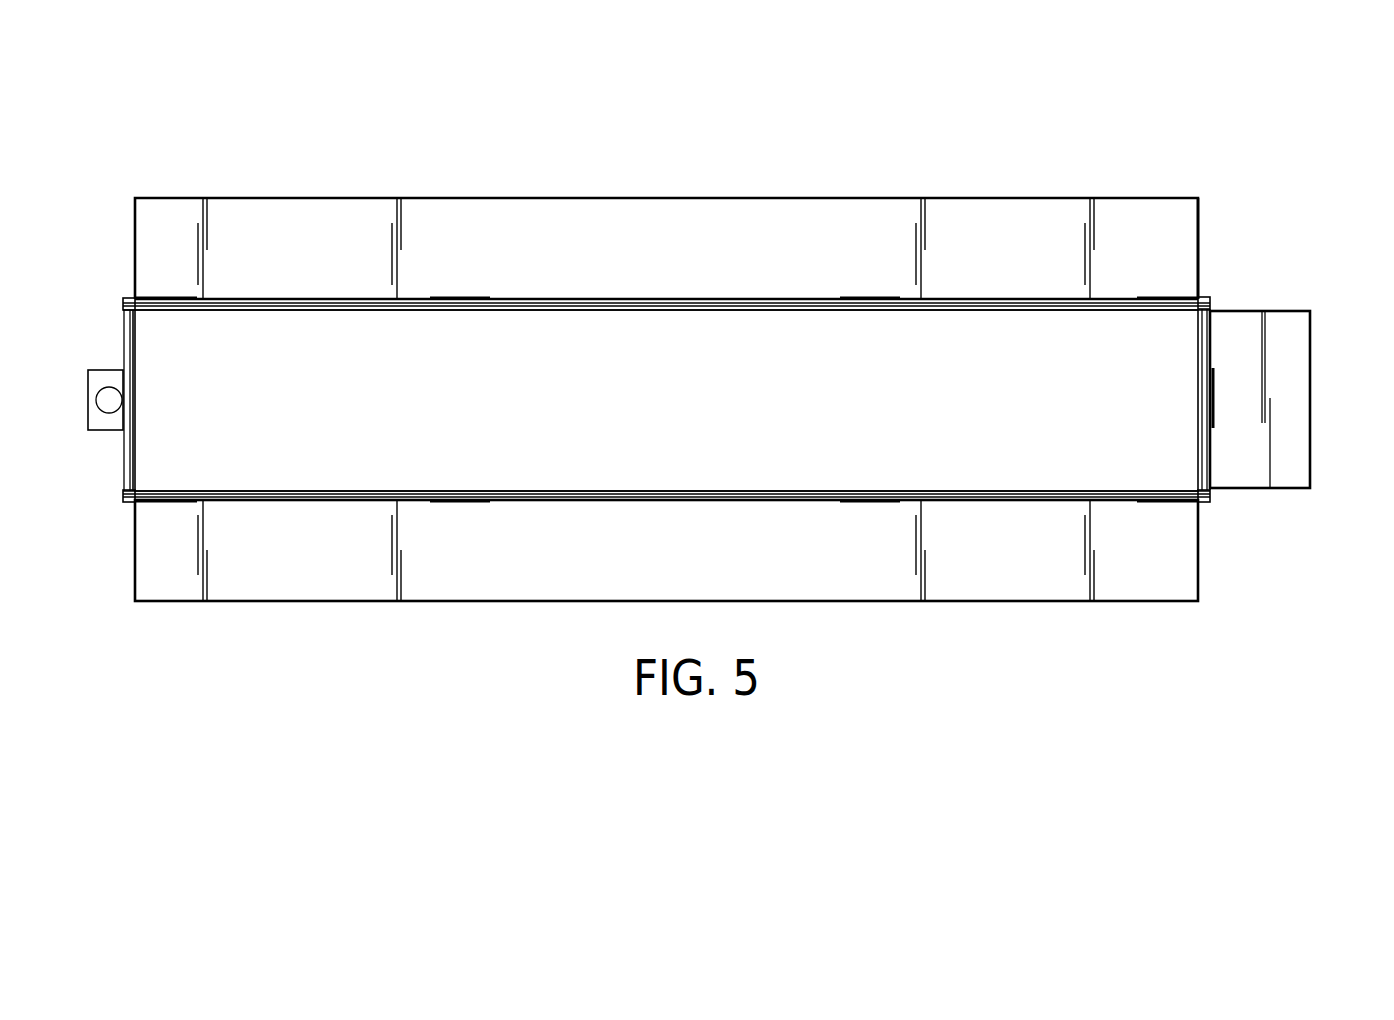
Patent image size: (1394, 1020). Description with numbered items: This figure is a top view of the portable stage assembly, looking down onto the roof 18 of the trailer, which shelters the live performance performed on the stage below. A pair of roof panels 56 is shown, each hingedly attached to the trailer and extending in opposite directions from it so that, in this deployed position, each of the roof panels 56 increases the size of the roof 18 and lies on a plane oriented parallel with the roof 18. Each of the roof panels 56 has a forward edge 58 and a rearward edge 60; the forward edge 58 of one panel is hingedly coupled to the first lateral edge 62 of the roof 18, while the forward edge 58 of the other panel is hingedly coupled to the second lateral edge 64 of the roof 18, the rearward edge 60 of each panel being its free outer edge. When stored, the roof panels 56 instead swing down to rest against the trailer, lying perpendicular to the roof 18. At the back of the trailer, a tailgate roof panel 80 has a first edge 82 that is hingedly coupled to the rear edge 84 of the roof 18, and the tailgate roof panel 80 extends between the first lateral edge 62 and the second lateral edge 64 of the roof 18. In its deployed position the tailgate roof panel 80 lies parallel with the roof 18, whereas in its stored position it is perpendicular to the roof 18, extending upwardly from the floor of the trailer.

The roof 18 is at (552, 363).
The roof panels 56 is at (885, 225).
The forward edge 58 is at (1163, 312).
The rearward edge 60 is at (1175, 195).
The first lateral edge 62 is at (1123, 480).
The second lateral edge 64 is at (1053, 300).
The tailgate roof panel 80 is at (1293, 458).
The first edge 82 is at (1205, 467).
The rear edge 84 is at (1213, 398).